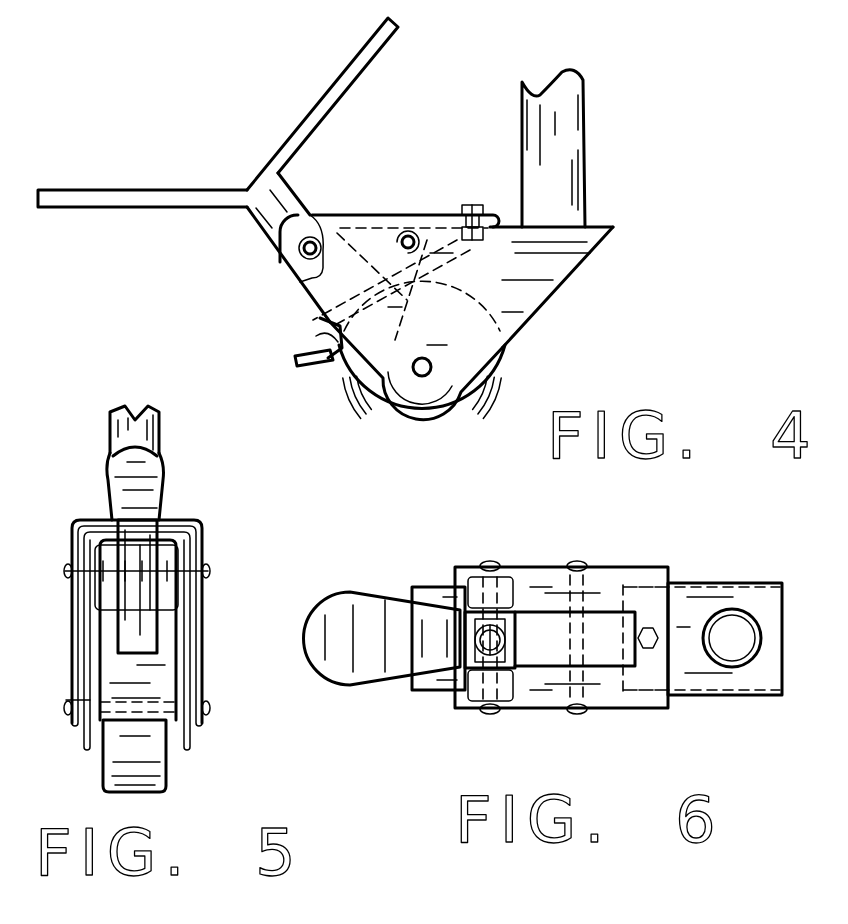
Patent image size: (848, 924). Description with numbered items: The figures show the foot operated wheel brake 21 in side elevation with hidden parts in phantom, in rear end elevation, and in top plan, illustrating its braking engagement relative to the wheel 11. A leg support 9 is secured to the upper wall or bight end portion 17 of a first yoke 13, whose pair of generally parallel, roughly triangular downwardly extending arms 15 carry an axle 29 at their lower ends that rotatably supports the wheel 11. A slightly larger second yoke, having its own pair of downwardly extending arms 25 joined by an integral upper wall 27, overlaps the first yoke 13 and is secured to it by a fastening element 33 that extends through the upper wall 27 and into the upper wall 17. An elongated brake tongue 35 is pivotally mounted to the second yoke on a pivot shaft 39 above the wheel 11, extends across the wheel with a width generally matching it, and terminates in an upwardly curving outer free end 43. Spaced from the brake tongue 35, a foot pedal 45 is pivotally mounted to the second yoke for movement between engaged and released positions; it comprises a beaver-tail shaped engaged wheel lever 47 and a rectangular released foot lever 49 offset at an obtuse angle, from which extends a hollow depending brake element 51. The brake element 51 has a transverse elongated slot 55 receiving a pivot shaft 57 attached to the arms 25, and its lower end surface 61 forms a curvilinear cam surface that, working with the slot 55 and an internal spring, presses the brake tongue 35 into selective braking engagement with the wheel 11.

In FIG. 4, the leg support 9 is at (568, 128).
In FIG. 5, the leg support 9 is at (153, 435).
In FIG. 6, the leg support 9 is at (742, 610).
In FIG. 4, the wheel 11 is at (430, 437).
In FIG. 5, the wheel 11 is at (157, 748).
In FIG. 4, the yoke 13 is at (603, 253).
In FIG. 5, the yoke 13 is at (135, 486).
In FIG. 6, the yoke 13 is at (738, 703).
In FIG. 4, the downwardly extending arms 15 is at (517, 320).
In FIG. 5, the downwardly extending arms 15 is at (203, 648).
In FIG. 4, the upper wall or bight end portion 17 is at (600, 226).
In FIG. 6, the upper wall or bight end portion 17 is at (685, 607).
In FIG. 4, the foot operated wheel brake 21 is at (190, 106).
In FIG. 5, the foot operated wheel brake 21 is at (76, 479).
In FIG. 6, the foot operated wheel brake 21 is at (539, 550).
In FIG. 4, the downwardly extending arms 25 is at (470, 273).
In FIG. 5, the downwardly extending arms 25 is at (198, 600).
In FIG. 4, the upper wall or bight end portion 27 is at (420, 214).
In FIG. 5, the upper wall or bight end portion 27 is at (180, 520).
In FIG. 6, the upper wall or bight end portion 27 is at (612, 574).
In FIG. 4, the axle 29 is at (420, 375).
In FIG. 5, the axle 29 is at (200, 685).
In FIG. 4, the fastening element 33 is at (480, 204).
In FIG. 6, the fastening element 33 is at (647, 627).
In FIG. 4, the brake tongue 35 is at (330, 340).
In FIG. 5, the brake tongue 35 is at (68, 697).
In FIG. 6, the brake tongue 35 is at (445, 688).
In FIG. 6, the pivot shaft 39 is at (558, 690).
In FIG. 4, the upwardly curving outer free end 43 is at (307, 370).
In FIG. 4, the foot pedal 45 is at (228, 221).
In FIG. 4, the engaged wheel lever 47 is at (100, 198).
In FIG. 4, the released foot lever 49 is at (362, 58).
In FIG. 4, the depending brake element 51 is at (267, 213).
In FIG. 4, the elongated slot 55 is at (323, 267).
In FIG. 4, the pivot shaft 57 is at (312, 244).
In FIG. 4, the lower end surface 61 is at (322, 339).